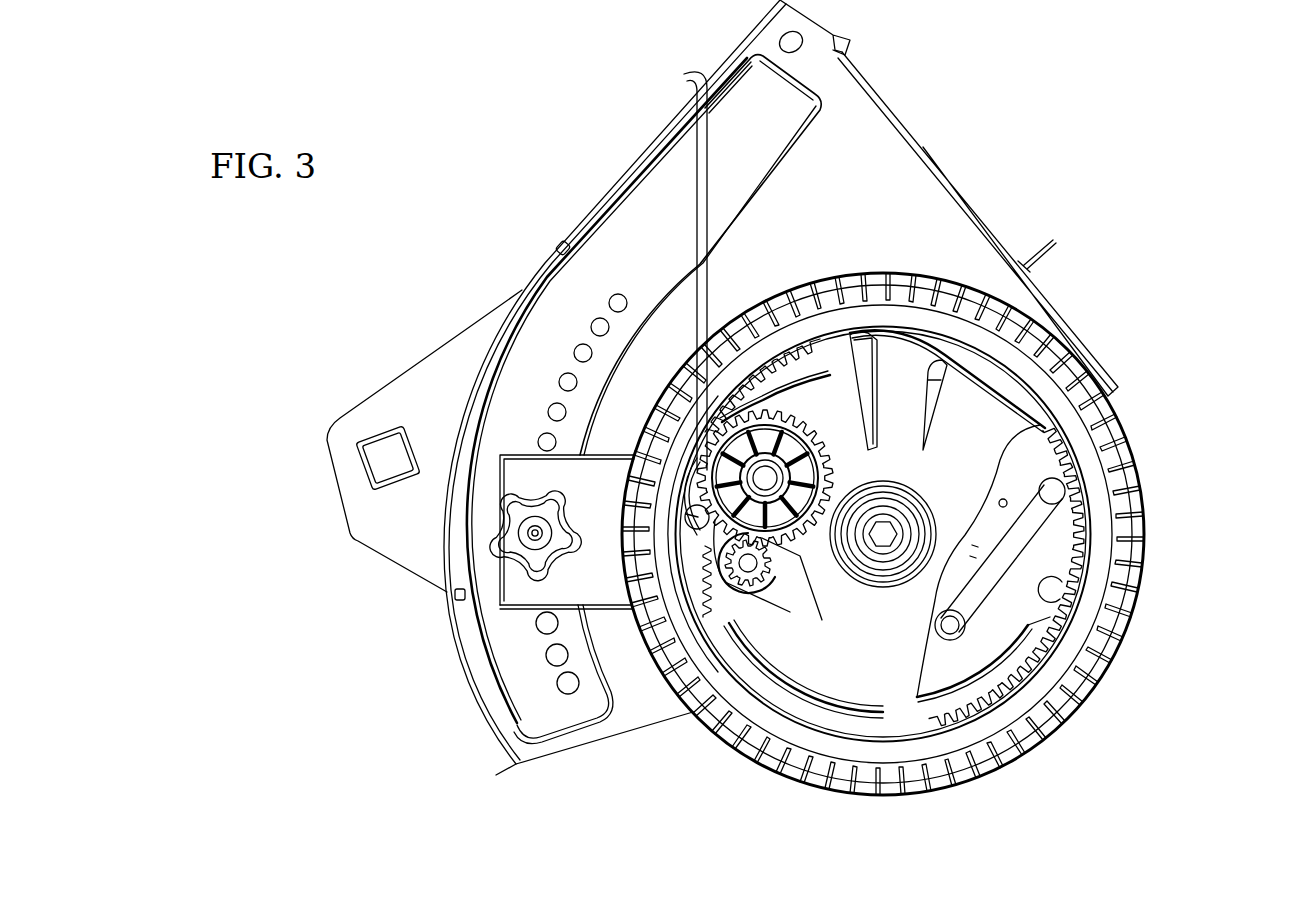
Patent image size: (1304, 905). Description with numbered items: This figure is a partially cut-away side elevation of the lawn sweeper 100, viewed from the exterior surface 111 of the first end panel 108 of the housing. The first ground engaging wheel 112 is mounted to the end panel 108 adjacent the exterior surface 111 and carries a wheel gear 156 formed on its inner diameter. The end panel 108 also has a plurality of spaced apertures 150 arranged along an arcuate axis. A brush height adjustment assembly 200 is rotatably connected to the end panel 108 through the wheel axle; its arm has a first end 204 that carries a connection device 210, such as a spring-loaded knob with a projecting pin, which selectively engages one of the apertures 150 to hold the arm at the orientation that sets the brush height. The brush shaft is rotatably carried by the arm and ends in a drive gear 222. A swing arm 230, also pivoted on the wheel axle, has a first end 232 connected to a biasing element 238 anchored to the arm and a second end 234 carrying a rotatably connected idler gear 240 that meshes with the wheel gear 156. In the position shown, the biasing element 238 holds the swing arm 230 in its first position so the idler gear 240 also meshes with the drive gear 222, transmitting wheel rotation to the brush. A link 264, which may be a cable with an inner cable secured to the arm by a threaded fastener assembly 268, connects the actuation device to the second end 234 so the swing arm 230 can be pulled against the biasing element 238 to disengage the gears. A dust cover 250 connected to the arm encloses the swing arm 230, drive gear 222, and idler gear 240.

The seat recliner assembly 100 is at (552, 125).
The first end panel 108 is at (880, 131).
The exterior surface 111 is at (876, 204).
The first ground engaging wheel 112 is at (1150, 418).
The spaced apertures 150 is at (578, 348).
The wheel gear 156 is at (1042, 660).
The brush height adjustment assembly 200 is at (485, 605).
The first end 204 is at (518, 606).
The connection device 210 is at (485, 525).
The drive gear 222 is at (772, 605).
The swing arm 230 is at (862, 474).
The first end 232 is at (952, 642).
The second end 234 is at (693, 487).
The biasing element 238 is at (988, 541).
The idler gear 240 is at (805, 414).
The dust cover 250 is at (1065, 540).
The link 264 is at (694, 80).
The threaded fastener assembly 268 is at (686, 517).